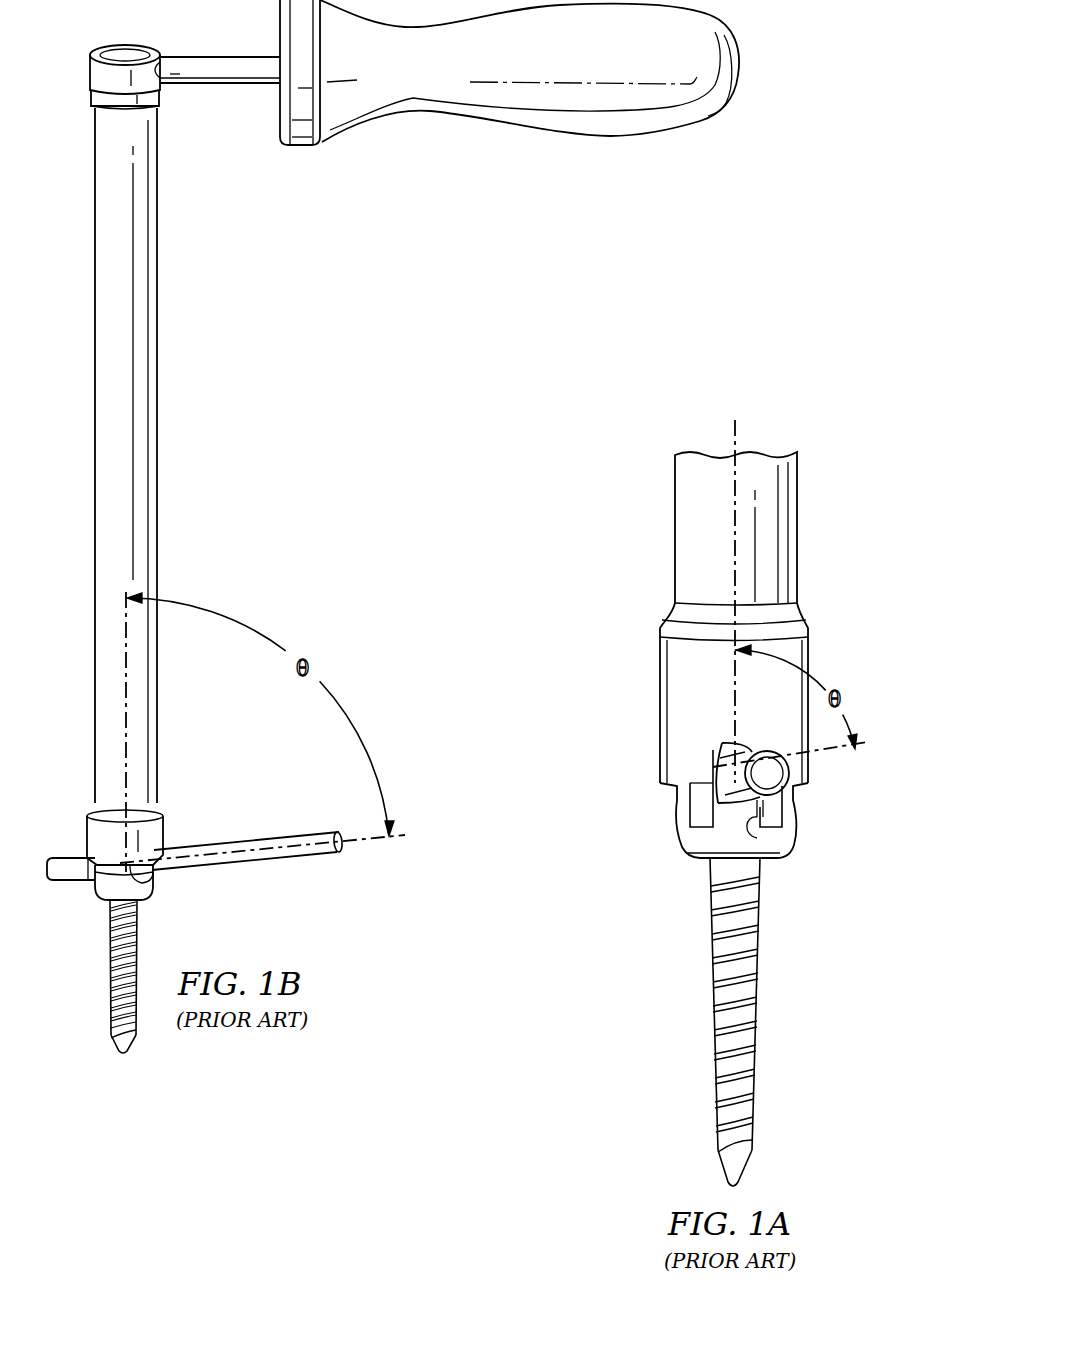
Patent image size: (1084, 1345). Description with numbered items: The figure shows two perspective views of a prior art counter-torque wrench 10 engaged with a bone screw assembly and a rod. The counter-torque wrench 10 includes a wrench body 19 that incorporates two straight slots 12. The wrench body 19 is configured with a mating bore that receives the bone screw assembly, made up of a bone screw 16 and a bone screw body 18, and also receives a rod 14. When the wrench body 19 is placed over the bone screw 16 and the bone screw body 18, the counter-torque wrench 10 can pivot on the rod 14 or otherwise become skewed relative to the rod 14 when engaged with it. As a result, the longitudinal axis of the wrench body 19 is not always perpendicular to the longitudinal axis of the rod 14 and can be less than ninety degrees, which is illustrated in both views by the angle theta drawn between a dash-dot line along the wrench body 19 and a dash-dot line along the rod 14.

In FIG. 1B, the counter-torque wrench 10 is at (360, 462).
In FIG. 1A, the counter-torque wrench 10 is at (822, 519).
In FIG. 1A, the straight slots 12 is at (758, 838).
In FIG. 1B, the rod 14 is at (272, 863).
In FIG. 1A, the rod 14 is at (760, 802).
In FIG. 1B, the bone screw 16 is at (110, 971).
In FIG. 1A, the bone screw 16 is at (757, 1051).
In FIG. 1B, the bone screw body 18 is at (94, 892).
In FIG. 1A, the bone screw body 18 is at (693, 840).
In FIG. 1B, the wrench body 19 is at (95, 702).
In FIG. 1A, the wrench body 19 is at (686, 582).